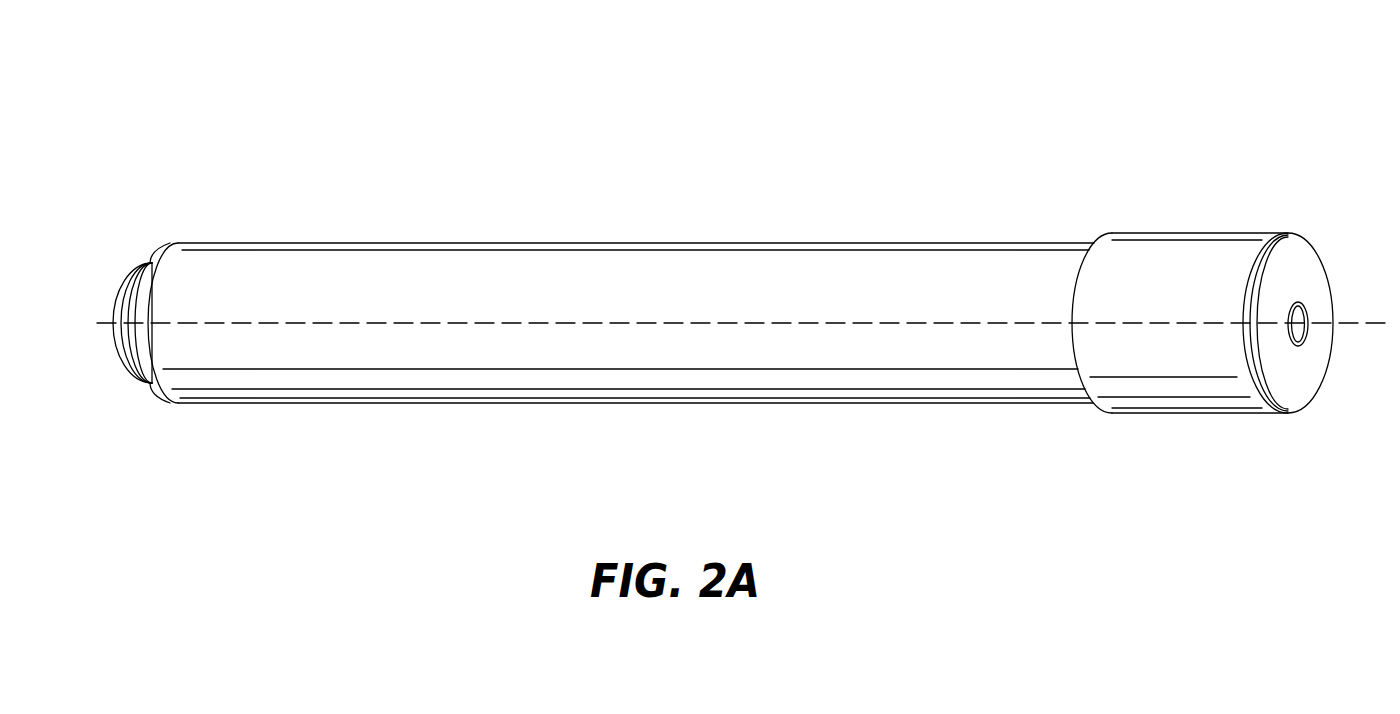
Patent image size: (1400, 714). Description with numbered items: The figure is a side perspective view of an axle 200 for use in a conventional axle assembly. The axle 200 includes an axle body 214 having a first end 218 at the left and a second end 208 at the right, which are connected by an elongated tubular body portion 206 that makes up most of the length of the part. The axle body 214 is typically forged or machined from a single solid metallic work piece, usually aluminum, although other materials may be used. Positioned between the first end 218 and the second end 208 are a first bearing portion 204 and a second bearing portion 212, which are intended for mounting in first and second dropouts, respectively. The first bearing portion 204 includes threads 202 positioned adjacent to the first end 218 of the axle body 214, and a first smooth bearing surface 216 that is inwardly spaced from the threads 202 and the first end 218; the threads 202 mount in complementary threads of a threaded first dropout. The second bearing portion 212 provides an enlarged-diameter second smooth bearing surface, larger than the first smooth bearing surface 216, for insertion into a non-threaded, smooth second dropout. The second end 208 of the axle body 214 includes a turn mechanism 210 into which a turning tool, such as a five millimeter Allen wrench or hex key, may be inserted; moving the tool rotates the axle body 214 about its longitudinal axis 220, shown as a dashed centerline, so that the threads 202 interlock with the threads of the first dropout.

The axle 200 is at (208, 89).
The threads 202 is at (142, 262).
The first bearing portion 204 is at (110, 208).
The elongated tubular body portion 206 is at (1072, 150).
The second end 208 is at (1287, 219).
The turn mechanism 210 is at (1301, 316).
The second bearing portion 212 is at (1072, 433).
The axle body 214 is at (635, 403).
The first smooth bearing surface 216 is at (232, 403).
The first end 218 is at (150, 404).
The longitudinal axis 220 is at (762, 323).